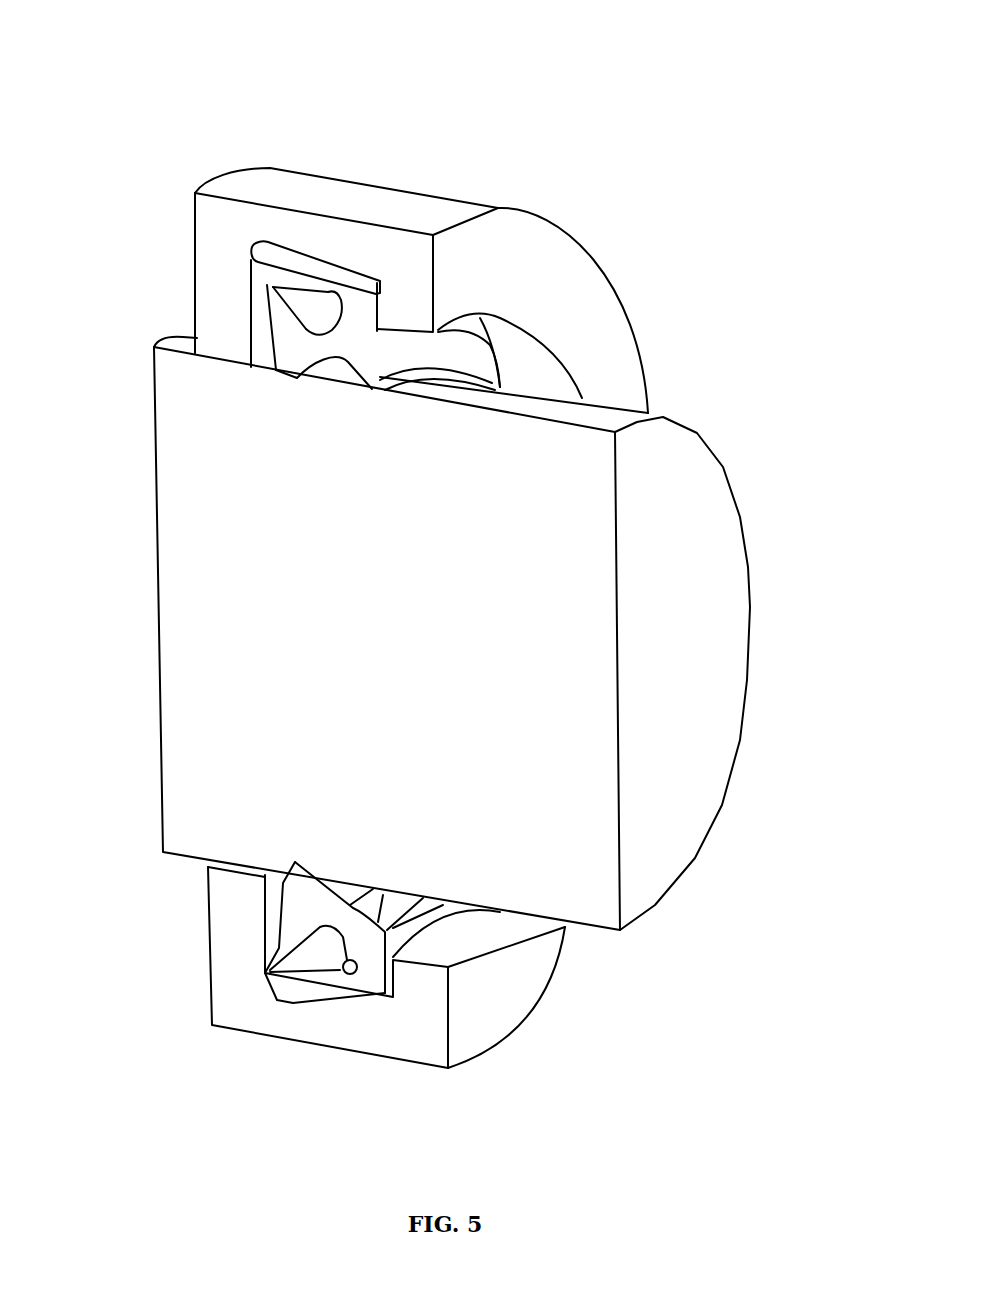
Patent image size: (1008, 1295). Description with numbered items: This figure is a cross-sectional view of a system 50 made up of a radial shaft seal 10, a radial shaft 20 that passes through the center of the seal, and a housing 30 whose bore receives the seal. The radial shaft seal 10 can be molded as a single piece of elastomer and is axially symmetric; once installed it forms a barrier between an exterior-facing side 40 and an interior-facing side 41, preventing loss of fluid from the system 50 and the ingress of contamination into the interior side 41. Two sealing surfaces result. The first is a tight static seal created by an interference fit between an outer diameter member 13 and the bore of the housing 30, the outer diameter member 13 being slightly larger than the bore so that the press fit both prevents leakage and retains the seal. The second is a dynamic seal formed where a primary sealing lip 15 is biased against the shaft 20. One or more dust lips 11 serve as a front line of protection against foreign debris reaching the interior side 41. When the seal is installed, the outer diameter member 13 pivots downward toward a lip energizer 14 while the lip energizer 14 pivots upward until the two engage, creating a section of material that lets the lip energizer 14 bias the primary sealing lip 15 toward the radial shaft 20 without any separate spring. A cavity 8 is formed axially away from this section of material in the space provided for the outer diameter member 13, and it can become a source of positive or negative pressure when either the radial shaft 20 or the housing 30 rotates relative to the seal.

The cavity 8 is at (343, 297).
The radial shaft seal 10 is at (288, 325).
The dust lip 11 is at (375, 390).
The outer diameter member 13 is at (282, 256).
The lip energizer 14 is at (268, 288).
The primary sealing lip 15 is at (290, 381).
The radial shaft 20 is at (702, 497).
The housing 30 is at (540, 243).
The exterior-facing side 40 is at (816, 225).
The interior-facing side 41 is at (64, 188).
The system 50 is at (588, 86).